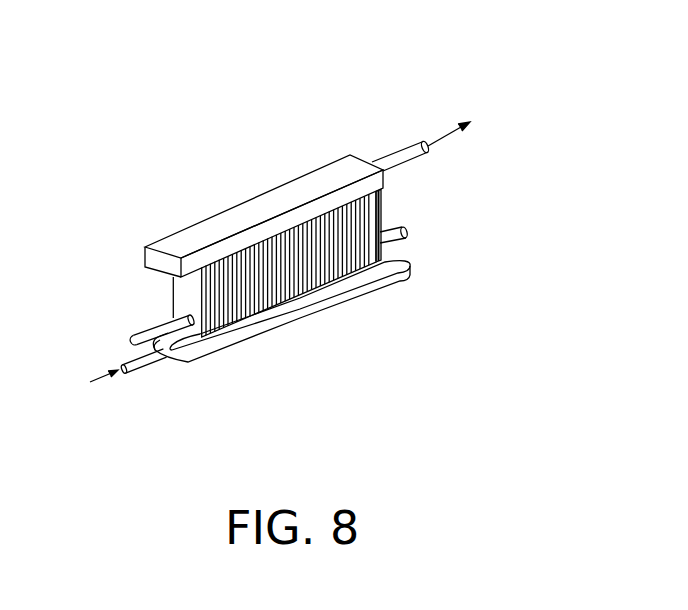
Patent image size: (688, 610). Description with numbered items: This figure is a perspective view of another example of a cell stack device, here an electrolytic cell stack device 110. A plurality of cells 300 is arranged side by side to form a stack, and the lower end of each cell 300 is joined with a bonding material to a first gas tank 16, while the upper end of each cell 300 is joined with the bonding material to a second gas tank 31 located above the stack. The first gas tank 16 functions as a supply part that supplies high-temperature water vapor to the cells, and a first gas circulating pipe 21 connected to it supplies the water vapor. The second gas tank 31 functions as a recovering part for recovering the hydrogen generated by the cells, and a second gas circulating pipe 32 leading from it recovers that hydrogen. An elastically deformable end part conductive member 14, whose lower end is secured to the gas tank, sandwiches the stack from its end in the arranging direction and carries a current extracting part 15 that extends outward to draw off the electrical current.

The heat exchanger device 110 is at (217, 128).
The second gas tank 31 is at (173, 242).
The second gas circulating pipe 32 is at (410, 147).
The end part conductive member 14 is at (177, 293).
The cell 300 is at (377, 200).
The current extracting part 15 is at (132, 341).
The first gas circulating pipe 21 is at (136, 372).
The first gas tank 16 is at (190, 364).